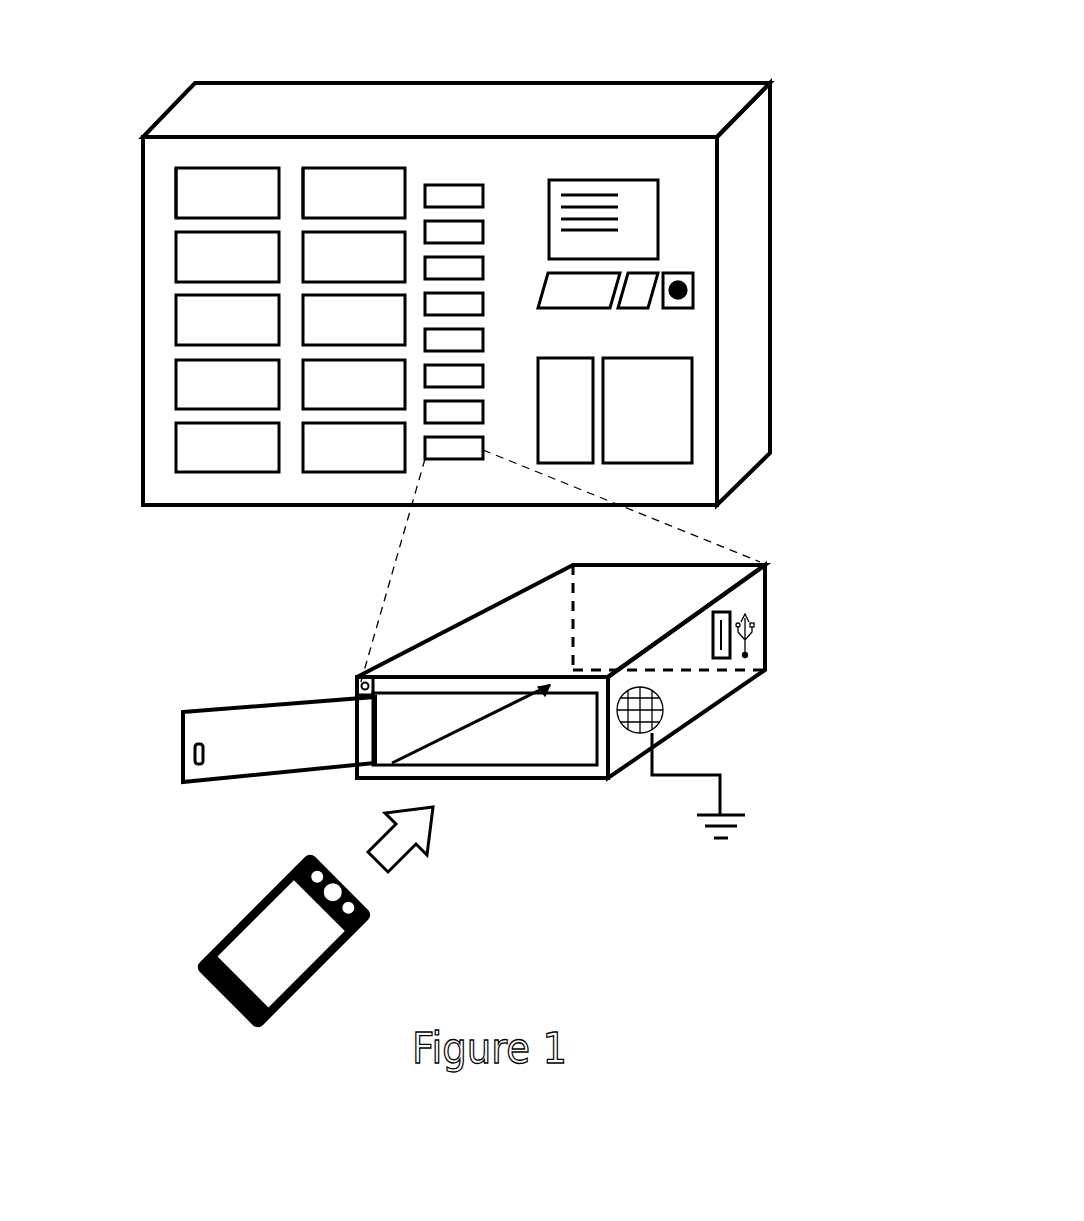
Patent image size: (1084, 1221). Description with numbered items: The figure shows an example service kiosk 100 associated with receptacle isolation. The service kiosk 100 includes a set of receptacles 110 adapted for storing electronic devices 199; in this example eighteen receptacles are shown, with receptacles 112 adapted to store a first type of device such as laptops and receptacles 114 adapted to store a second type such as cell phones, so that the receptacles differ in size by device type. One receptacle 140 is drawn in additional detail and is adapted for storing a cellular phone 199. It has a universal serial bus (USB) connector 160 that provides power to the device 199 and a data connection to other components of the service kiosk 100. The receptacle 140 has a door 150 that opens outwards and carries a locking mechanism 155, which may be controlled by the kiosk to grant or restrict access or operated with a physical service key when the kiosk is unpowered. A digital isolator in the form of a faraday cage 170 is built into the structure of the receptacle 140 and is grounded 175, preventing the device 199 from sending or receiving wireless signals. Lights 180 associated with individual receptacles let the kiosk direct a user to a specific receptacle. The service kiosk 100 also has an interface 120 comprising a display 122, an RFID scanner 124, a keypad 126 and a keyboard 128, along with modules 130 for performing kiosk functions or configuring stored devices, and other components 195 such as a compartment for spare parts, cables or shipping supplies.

The service kiosk 100 is at (573, 83).
The set of receptacles 110 is at (125, 172).
The receptacles for a first type of device 112 is at (400, 75).
The receptacles for a second type of device 114 is at (483, 75).
The interface 120 is at (750, 266).
The display 122 is at (658, 219).
The radio frequency identification (RFID) scanner 124 is at (693, 290).
The keypad 126 is at (640, 308).
The keyboard 128 is at (580, 308).
The modules 130 is at (565, 463).
The other components 195 is at (692, 410).
The receptacle 140 is at (547, 778).
The door 150 is at (282, 698).
The locking mechanism 155 is at (197, 757).
The universal serial bus (USB) connector 160 is at (728, 612).
The digital isolator (faraday cage) 170 is at (662, 712).
The ground 175 is at (720, 787).
The lights 180 is at (357, 688).
The electronic device 199 is at (375, 915).